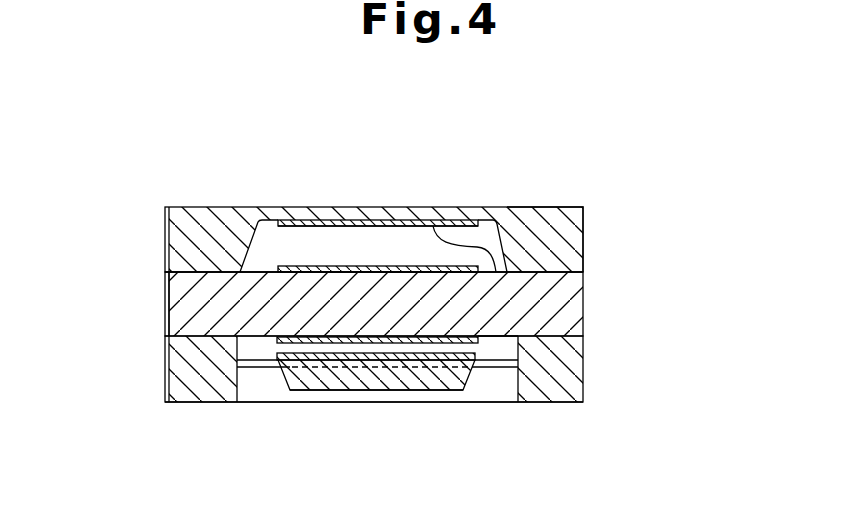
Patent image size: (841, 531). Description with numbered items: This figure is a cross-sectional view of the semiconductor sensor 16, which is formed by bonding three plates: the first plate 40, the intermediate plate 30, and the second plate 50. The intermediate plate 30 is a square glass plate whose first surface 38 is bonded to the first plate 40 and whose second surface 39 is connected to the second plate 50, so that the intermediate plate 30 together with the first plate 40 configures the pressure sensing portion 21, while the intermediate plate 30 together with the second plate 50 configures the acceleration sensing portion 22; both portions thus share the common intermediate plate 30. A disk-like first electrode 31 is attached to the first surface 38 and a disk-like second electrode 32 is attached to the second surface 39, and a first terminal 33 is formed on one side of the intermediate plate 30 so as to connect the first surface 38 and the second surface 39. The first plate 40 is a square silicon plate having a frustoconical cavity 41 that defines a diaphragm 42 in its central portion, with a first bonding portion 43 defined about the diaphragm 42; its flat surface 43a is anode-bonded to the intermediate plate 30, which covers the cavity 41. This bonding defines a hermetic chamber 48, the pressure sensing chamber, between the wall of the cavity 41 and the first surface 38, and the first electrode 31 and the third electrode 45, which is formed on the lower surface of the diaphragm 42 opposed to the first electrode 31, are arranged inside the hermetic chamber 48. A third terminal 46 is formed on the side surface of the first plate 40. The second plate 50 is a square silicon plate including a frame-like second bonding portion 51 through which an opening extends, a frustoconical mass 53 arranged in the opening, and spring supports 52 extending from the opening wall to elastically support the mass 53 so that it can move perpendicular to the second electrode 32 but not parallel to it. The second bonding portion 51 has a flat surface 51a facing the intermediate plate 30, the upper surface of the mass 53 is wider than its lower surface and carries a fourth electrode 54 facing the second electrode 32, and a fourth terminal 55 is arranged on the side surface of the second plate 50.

The semiconductor sensor 16 is at (641, 173).
The pressure sensing portion 21 is at (663, 232).
The acceleration sensing portion 22 is at (667, 328).
The intermediate plate 30 is at (583, 303).
The first electrode 31 is at (362, 250).
The second electrode 32 is at (326, 343).
The first terminal 33 is at (165, 307).
The first surface 38 is at (433, 226).
The second surface 39 is at (508, 338).
The first plate 40 is at (583, 232).
The cavity 41 is at (231, 207).
The diaphragm 42 is at (274, 207).
The first bonding portion 43 is at (568, 207).
The flat surface 43a is at (583, 276).
The third electrode 45 is at (327, 238).
The third terminal 46 is at (163, 238).
The hermetic chamber 48 is at (498, 233).
The second plate 50 is at (583, 368).
The second bonding portion 51 is at (563, 392).
The flat surface 51a is at (583, 338).
The spring support 52 is at (258, 367).
The mass 53 is at (428, 388).
The fourth electrode 54 is at (385, 365).
The fourth terminal 55 is at (165, 368).